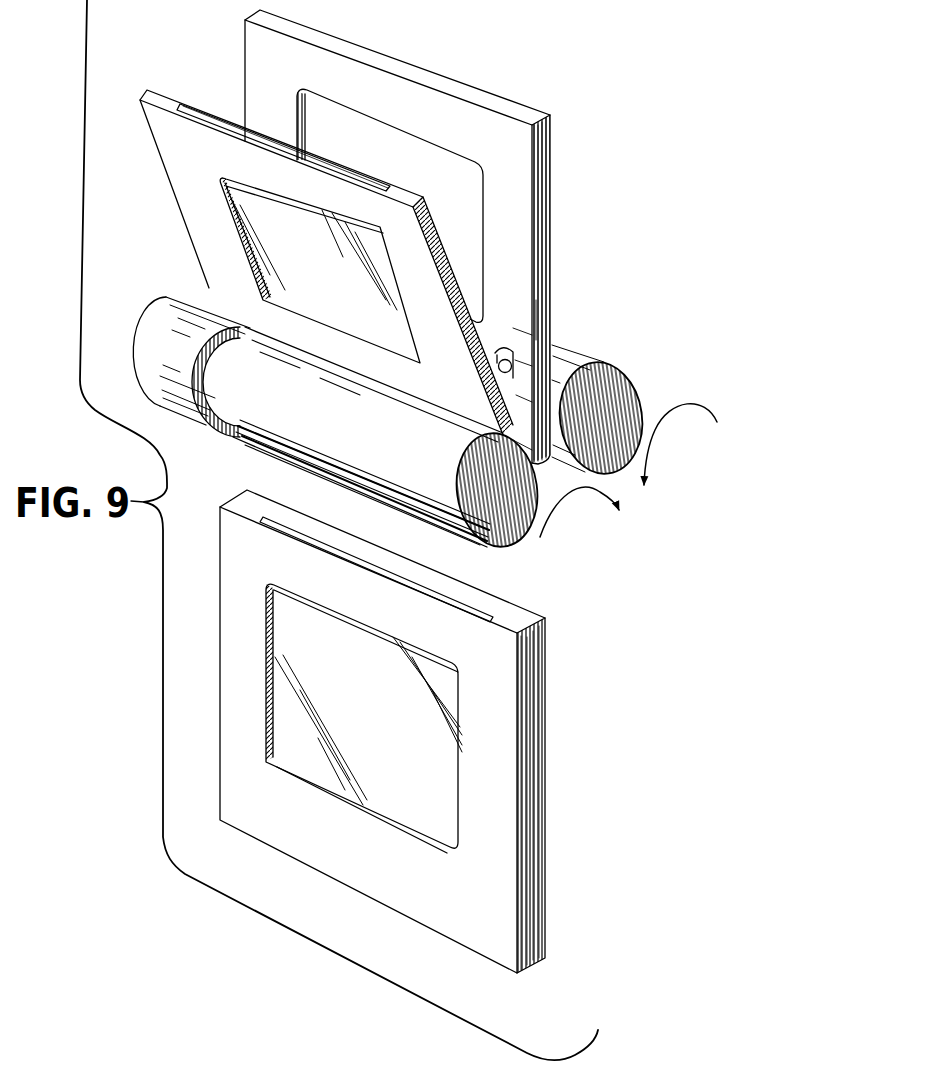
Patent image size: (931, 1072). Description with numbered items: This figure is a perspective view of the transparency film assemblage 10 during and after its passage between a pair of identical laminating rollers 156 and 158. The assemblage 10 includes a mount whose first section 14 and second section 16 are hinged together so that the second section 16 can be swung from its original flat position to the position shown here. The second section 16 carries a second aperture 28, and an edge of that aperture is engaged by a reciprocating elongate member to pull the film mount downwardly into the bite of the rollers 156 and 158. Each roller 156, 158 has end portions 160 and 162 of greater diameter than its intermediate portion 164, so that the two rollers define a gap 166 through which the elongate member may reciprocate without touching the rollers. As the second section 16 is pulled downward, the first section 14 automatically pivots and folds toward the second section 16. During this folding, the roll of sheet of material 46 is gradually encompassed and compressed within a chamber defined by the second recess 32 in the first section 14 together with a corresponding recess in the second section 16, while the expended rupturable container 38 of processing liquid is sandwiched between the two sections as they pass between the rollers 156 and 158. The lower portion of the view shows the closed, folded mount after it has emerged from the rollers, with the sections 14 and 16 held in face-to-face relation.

The transparency film assemblage 10 is at (162, 205).
The first section 14 is at (186, 238).
The second section 16 is at (547, 198).
The second aperture 28 is at (416, 130).
The second recess 32 is at (510, 372).
The rupturable container 38 is at (226, 116).
The sheet of material 46 is at (498, 349).
The roller 156 is at (247, 452).
The roller 158 is at (560, 311).
The end portion 160 is at (153, 323).
The end portion 162 is at (622, 386).
The intermediate portion 164 is at (324, 464).
The gap 166 is at (319, 353).